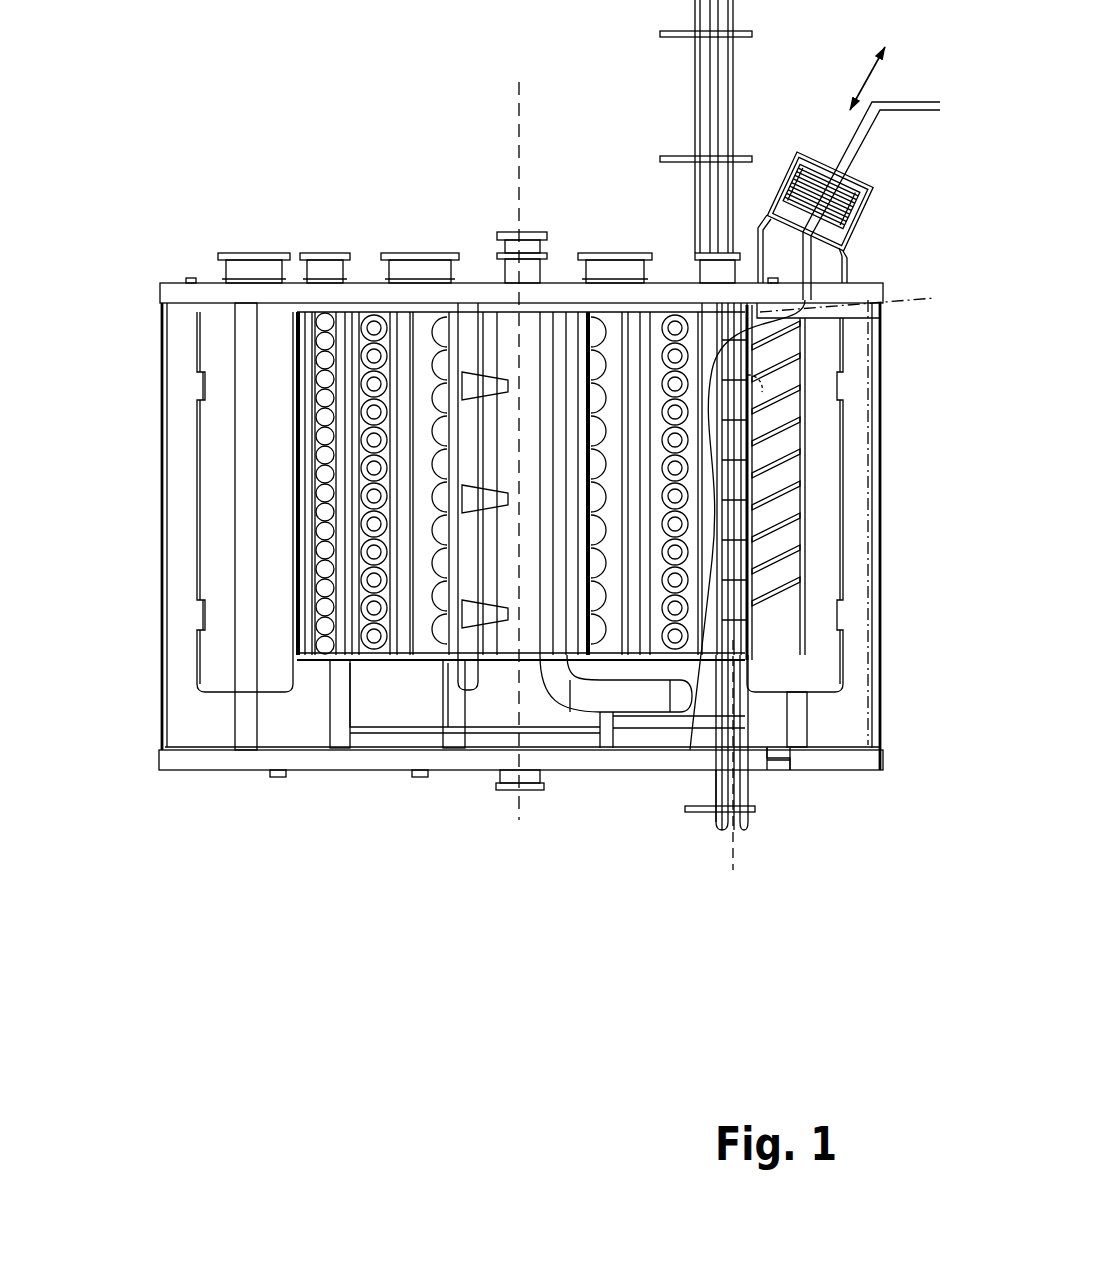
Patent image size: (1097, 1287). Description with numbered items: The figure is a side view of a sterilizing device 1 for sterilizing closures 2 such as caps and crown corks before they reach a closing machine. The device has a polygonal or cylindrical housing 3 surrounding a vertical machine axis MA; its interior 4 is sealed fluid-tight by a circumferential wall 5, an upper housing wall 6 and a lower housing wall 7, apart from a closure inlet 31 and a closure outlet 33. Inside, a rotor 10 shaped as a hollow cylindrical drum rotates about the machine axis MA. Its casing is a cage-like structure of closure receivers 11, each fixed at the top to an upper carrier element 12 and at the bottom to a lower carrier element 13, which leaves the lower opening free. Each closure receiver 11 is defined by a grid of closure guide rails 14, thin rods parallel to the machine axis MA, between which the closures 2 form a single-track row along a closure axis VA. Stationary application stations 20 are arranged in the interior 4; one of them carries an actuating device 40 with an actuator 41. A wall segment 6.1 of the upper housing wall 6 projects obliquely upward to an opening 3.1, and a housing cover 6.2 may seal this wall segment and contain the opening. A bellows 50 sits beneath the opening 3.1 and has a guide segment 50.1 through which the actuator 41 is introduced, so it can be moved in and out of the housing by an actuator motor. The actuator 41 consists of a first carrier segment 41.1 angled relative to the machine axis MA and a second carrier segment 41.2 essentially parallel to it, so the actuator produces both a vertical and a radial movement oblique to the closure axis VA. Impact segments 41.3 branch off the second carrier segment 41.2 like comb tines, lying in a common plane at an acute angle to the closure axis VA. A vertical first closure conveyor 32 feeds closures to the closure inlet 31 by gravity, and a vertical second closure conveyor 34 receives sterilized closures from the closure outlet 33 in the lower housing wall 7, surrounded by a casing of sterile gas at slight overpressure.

The sterilizing device 1 is at (263, 73).
The closures 2 is at (440, 647).
The housing 3 is at (107, 363).
The opening 3.1 is at (837, 163).
The interior 4 is at (182, 602).
The circumferential wall 5 is at (162, 437).
The upper housing wall 6 is at (222, 293).
The wall segment 6.1 is at (873, 207).
The housing cover 6.2 is at (860, 182).
The lower housing wall 7 is at (200, 763).
The rotor 10 is at (290, 362).
The closure receiver 11 is at (422, 643).
The upper carrier element 12 is at (375, 312).
The lower carrier element 13 is at (318, 654).
The closure guide rails 14 is at (426, 325).
The application stations 20 is at (208, 482).
The closure inlet 31 is at (688, 274).
The first closure conveyor 32 is at (702, 100).
The closure outlet 33 is at (712, 780).
The second closure conveyor 34 is at (732, 828).
The actuating device 40 is at (833, 435).
The actuator 41 is at (807, 362).
The first carrier segment 41.1 is at (865, 135).
The second carrier segment 41.2 is at (797, 502).
The impact segments 41.3 is at (767, 473).
The bellows 50 is at (855, 219).
The guide segment 50.1 is at (822, 214).
The machine axis MA is at (510, 435).
The closure axis VA is at (733, 782).